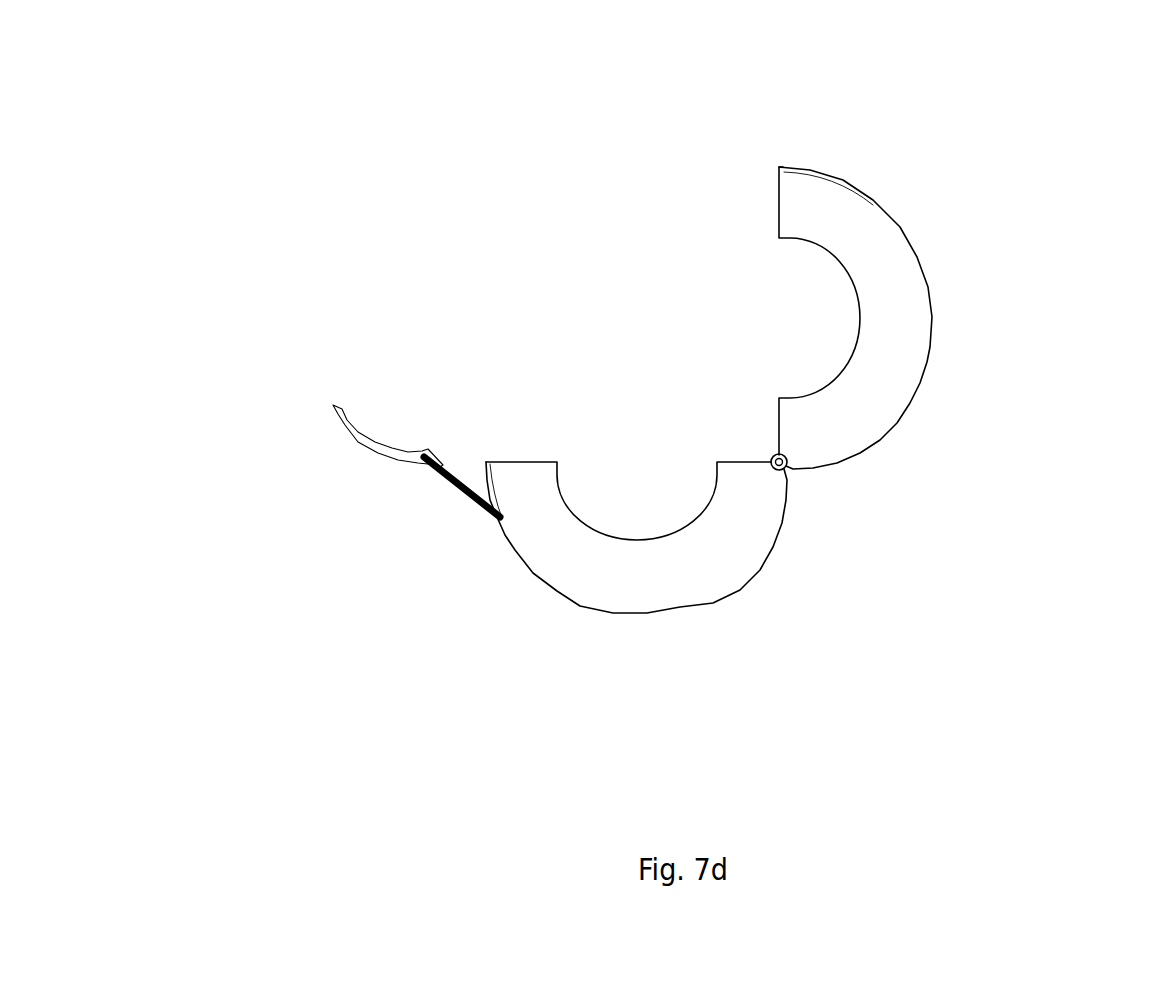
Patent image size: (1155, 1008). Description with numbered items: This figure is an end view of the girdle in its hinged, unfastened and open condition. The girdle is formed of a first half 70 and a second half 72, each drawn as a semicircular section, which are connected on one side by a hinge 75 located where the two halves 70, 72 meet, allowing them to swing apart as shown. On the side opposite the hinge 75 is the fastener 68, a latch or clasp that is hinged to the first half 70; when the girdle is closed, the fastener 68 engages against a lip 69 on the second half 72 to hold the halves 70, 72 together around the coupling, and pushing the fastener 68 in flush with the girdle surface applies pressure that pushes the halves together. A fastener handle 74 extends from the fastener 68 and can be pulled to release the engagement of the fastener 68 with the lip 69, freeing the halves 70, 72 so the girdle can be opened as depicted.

The fastener 68 is at (430, 477).
The lip 69 is at (805, 175).
The first half 70 is at (625, 581).
The second half 72 is at (905, 322).
The fastener handle 74 is at (333, 405).
The hinge 75 is at (789, 467).